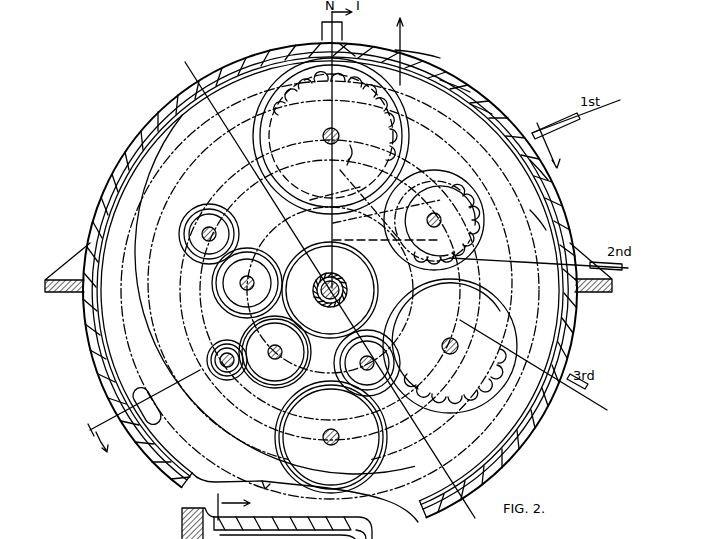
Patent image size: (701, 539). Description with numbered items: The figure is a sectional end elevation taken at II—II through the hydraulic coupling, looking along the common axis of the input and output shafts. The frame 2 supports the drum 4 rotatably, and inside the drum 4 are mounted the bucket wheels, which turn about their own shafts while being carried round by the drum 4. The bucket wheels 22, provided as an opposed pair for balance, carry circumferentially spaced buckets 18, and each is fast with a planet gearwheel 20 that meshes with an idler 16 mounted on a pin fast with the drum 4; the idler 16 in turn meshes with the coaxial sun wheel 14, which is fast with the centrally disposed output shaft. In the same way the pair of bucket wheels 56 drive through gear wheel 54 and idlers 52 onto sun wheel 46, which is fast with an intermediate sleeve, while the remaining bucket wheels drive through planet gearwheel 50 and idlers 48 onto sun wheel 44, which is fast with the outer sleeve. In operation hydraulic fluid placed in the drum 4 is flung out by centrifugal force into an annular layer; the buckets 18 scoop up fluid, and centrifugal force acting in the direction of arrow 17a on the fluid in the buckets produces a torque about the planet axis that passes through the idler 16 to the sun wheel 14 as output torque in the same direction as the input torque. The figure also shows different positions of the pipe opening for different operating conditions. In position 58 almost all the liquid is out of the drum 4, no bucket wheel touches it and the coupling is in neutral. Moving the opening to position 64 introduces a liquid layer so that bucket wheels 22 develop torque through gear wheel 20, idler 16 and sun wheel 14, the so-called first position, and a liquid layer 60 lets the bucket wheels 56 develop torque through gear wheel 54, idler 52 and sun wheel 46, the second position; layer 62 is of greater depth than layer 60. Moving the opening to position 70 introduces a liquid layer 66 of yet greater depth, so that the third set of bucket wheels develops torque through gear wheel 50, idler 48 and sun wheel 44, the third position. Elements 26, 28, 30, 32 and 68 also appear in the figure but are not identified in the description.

The frame 2 is at (112, 440).
The drum 4 is at (185, 484).
The sun wheel 14 is at (333, 264).
The idler 16 is at (278, 388).
The arrow 17a is at (402, 32).
The buckets 18 is at (412, 55).
The planet gearwheel 20 is at (266, 486).
The bucket wheel 22 is at (258, 458).
The opening 26 is at (136, 396).
The plug 28 is at (322, 30).
The conduit 30 is at (370, 534).
The gear 32 is at (290, 150).
The sun wheel 44 is at (336, 290).
The sun wheel 46 is at (344, 281).
The idler 48 is at (252, 323).
The planet gearwheel 50 is at (206, 358).
The idler 52 is at (215, 268).
The gear wheel 54 is at (178, 233).
The bucket wheel 56 is at (142, 204).
The pipe opening position 58 is at (350, 58).
The liquid layer 60 is at (466, 92).
The liquid layer 62 is at (490, 113).
The pipe opening position 64 is at (546, 172).
The liquid layer 66 is at (465, 217).
The casing portion 68 is at (540, 218).
The pipe opening position 70 is at (483, 323).